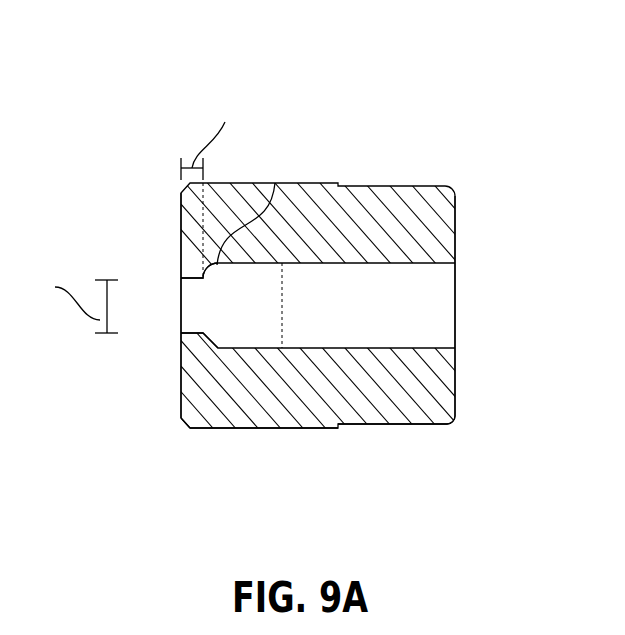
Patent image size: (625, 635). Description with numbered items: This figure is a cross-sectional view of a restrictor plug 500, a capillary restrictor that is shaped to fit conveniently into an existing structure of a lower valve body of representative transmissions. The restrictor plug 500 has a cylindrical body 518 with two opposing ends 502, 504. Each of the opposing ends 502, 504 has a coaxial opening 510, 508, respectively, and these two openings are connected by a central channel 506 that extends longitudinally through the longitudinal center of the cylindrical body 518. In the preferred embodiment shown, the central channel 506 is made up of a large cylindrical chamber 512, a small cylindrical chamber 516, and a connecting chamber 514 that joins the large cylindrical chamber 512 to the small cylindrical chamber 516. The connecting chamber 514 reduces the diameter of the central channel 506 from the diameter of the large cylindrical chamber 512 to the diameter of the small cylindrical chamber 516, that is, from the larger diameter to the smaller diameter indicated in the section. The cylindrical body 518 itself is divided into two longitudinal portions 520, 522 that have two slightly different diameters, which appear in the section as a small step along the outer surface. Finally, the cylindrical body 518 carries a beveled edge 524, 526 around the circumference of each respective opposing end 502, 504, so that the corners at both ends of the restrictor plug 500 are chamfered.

The restrictor plug 500 is at (322, 112).
The opposing end 502 is at (130, 343).
The opposing end 504 is at (460, 230).
The central channel 506 is at (366, 262).
The coaxial opening 508 is at (455, 290).
The coaxial opening 510 is at (181, 312).
The large cylindrical chamber 512 is at (430, 323).
The connecting chamber 514 is at (276, 183).
The small cylindrical chamber 516 is at (190, 293).
The cylindrical body 518 is at (323, 410).
The longitudinal portion 520 is at (240, 428).
The longitudinal portion 522 is at (397, 428).
The beveled edge 524 is at (183, 422).
The beveled edge 526 is at (455, 418).